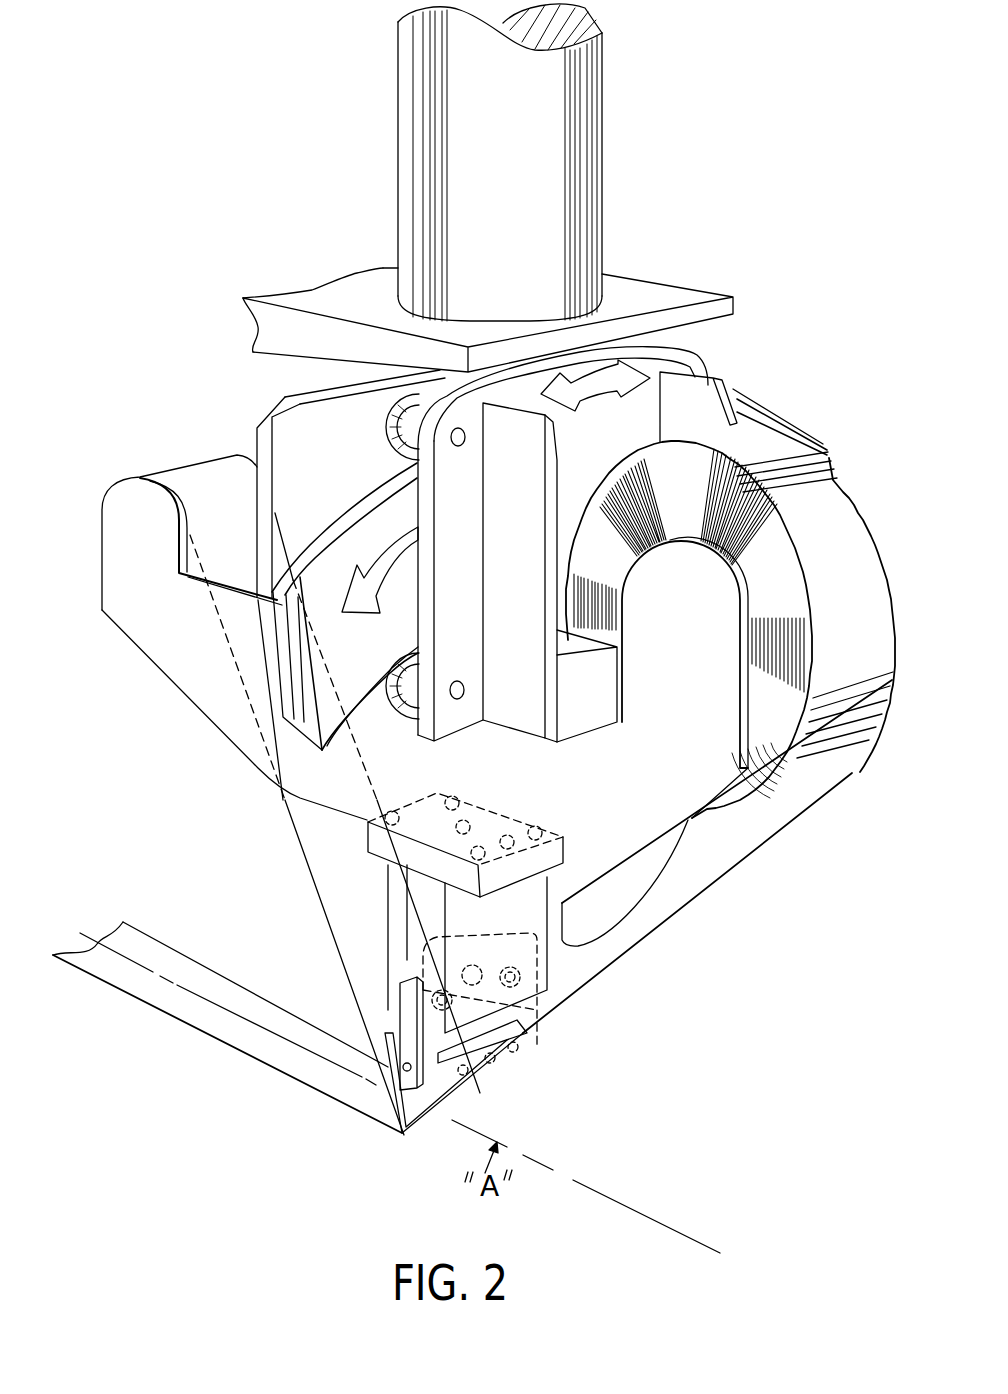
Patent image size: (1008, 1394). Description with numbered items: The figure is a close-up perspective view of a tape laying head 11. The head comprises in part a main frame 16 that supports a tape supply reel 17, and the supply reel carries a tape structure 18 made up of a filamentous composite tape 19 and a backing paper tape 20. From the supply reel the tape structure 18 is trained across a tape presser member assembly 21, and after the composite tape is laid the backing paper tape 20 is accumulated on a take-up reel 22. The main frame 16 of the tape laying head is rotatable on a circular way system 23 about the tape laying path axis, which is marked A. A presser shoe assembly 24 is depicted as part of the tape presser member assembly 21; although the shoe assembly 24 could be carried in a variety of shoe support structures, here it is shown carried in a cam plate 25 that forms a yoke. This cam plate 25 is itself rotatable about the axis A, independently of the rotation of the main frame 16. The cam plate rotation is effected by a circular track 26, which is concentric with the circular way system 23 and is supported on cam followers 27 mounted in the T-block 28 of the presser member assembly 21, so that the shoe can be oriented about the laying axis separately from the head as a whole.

The tape laying head 11 is at (261, 772).
The main frame 16 is at (606, 791).
The tape supply reel 17 is at (568, 573).
The tape structure 18 is at (734, 875).
The filamentous composite tape 19 is at (232, 1053).
The backing paper tape 20 is at (327, 923).
The tape presser member assembly 21 is at (380, 929).
The take-up reel 22 is at (243, 456).
The circular way system 23 is at (378, 655).
The presser shoe assembly 24 is at (431, 1113).
The cam plate 25 is at (388, 1040).
The circular track 26 is at (484, 966).
The cam followers 27 is at (552, 1002).
The T-block 28 is at (367, 834).